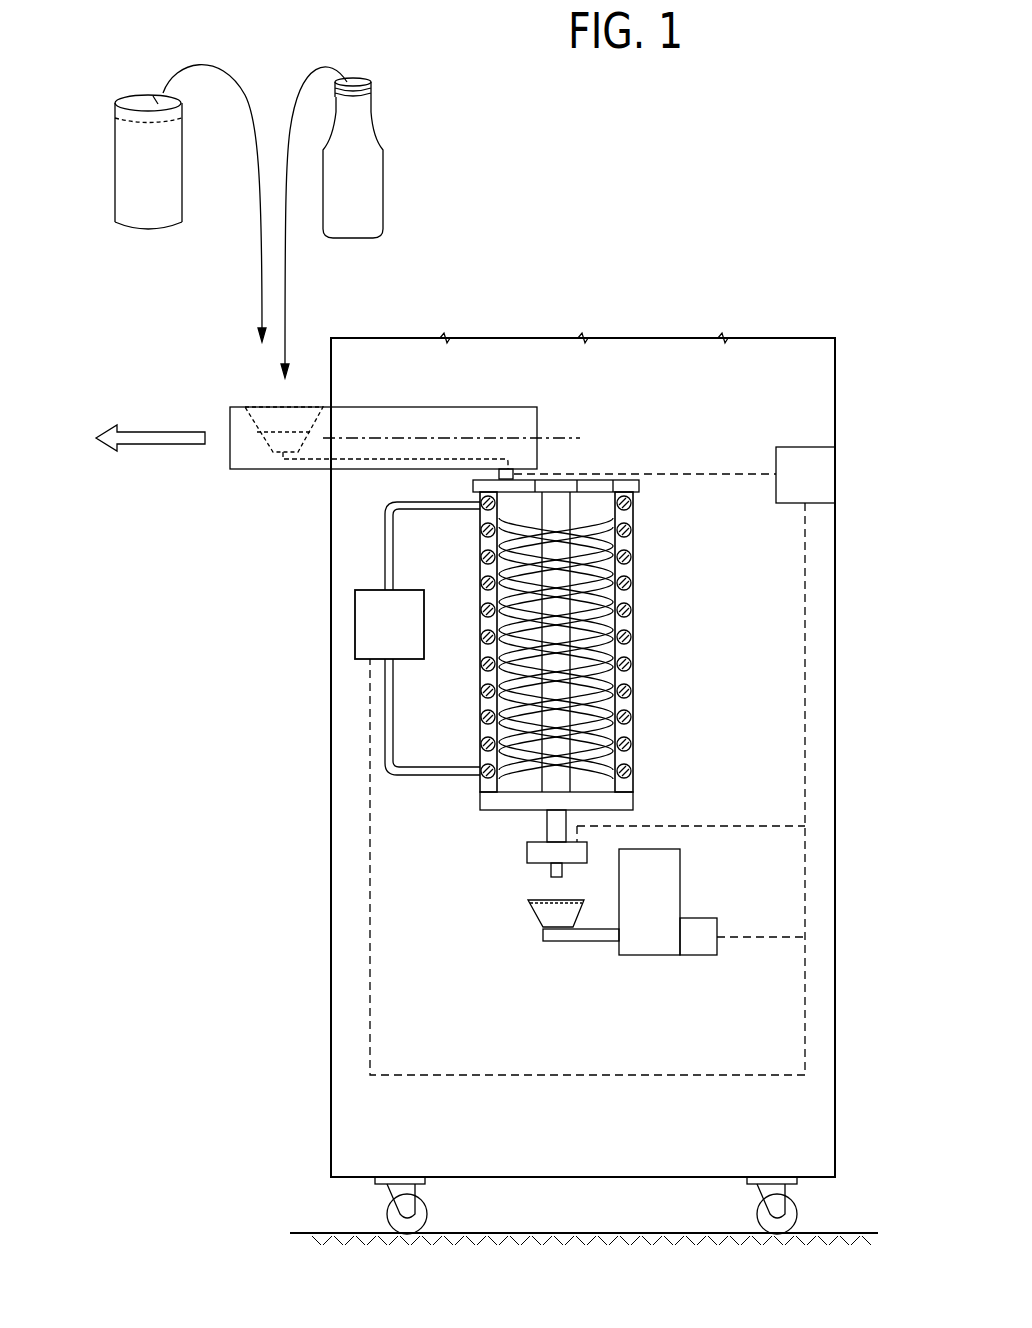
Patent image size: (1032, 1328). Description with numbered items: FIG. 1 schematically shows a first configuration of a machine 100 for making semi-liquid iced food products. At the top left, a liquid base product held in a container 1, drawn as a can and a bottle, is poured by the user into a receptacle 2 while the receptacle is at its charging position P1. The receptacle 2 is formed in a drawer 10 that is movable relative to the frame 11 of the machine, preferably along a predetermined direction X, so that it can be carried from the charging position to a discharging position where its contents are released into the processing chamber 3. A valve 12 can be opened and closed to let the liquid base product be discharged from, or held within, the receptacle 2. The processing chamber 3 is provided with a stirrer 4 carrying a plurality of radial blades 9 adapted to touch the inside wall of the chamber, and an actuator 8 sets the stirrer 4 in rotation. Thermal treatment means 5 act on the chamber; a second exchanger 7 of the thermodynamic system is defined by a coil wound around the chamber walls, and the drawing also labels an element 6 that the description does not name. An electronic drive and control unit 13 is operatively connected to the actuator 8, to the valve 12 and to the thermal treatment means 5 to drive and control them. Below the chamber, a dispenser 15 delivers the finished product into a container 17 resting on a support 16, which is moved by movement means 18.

The container 1 is at (97, 149).
The receptacle 2 is at (258, 388).
The processing chamber 3 is at (565, 601).
The stirrer 4 is at (524, 762).
The thermal treatment means 5 is at (565, 642).
The heating unit 6 is at (411, 638).
The second exchanger 7 is at (649, 637).
The actuator 8 is at (566, 480).
The radial blades 9 is at (596, 690).
The drawer 10 is at (338, 386).
The frame 11 is at (320, 650).
The valve 12 is at (488, 474).
The drive and control unit 13 is at (793, 490).
The dispenser 15 is at (514, 848).
The support 16 is at (557, 955).
The container of the finished iced food product 17 is at (518, 919).
The movement means 18 is at (637, 894).
The machine 100 is at (477, 627).
The charging position P1 is at (303, 378).
The predetermined direction X is at (580, 437).